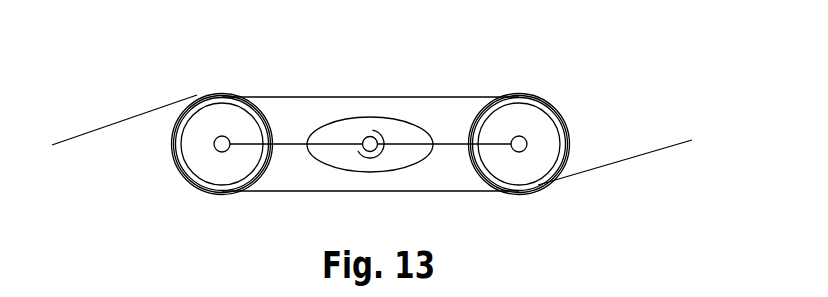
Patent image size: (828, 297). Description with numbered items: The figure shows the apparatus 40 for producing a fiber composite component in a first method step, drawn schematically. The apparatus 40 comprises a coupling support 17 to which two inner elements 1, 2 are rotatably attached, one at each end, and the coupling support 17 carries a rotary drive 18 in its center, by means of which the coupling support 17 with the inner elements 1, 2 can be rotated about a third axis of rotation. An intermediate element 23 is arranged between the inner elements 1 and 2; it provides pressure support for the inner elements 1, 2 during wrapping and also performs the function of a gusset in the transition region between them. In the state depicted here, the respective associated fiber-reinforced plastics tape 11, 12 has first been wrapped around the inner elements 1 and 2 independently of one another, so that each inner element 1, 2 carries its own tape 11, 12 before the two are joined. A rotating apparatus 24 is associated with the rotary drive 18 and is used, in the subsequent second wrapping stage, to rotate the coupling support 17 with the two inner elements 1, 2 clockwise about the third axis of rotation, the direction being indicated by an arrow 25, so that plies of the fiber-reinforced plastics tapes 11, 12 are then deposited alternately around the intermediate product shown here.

The inner element 1 is at (187, 174).
The inner element 2 is at (553, 119).
The fiber-reinforced plastics tape 11 is at (78, 133).
The fiber-reinforced plastics tape 12 is at (692, 140).
The coupling support 17 is at (441, 159).
The rotary drive 18 is at (358, 138).
The intermediate element 23 is at (306, 92).
The rotating apparatus 24 is at (392, 117).
The arrow 25 is at (362, 156).
The apparatus 40 is at (502, 70).